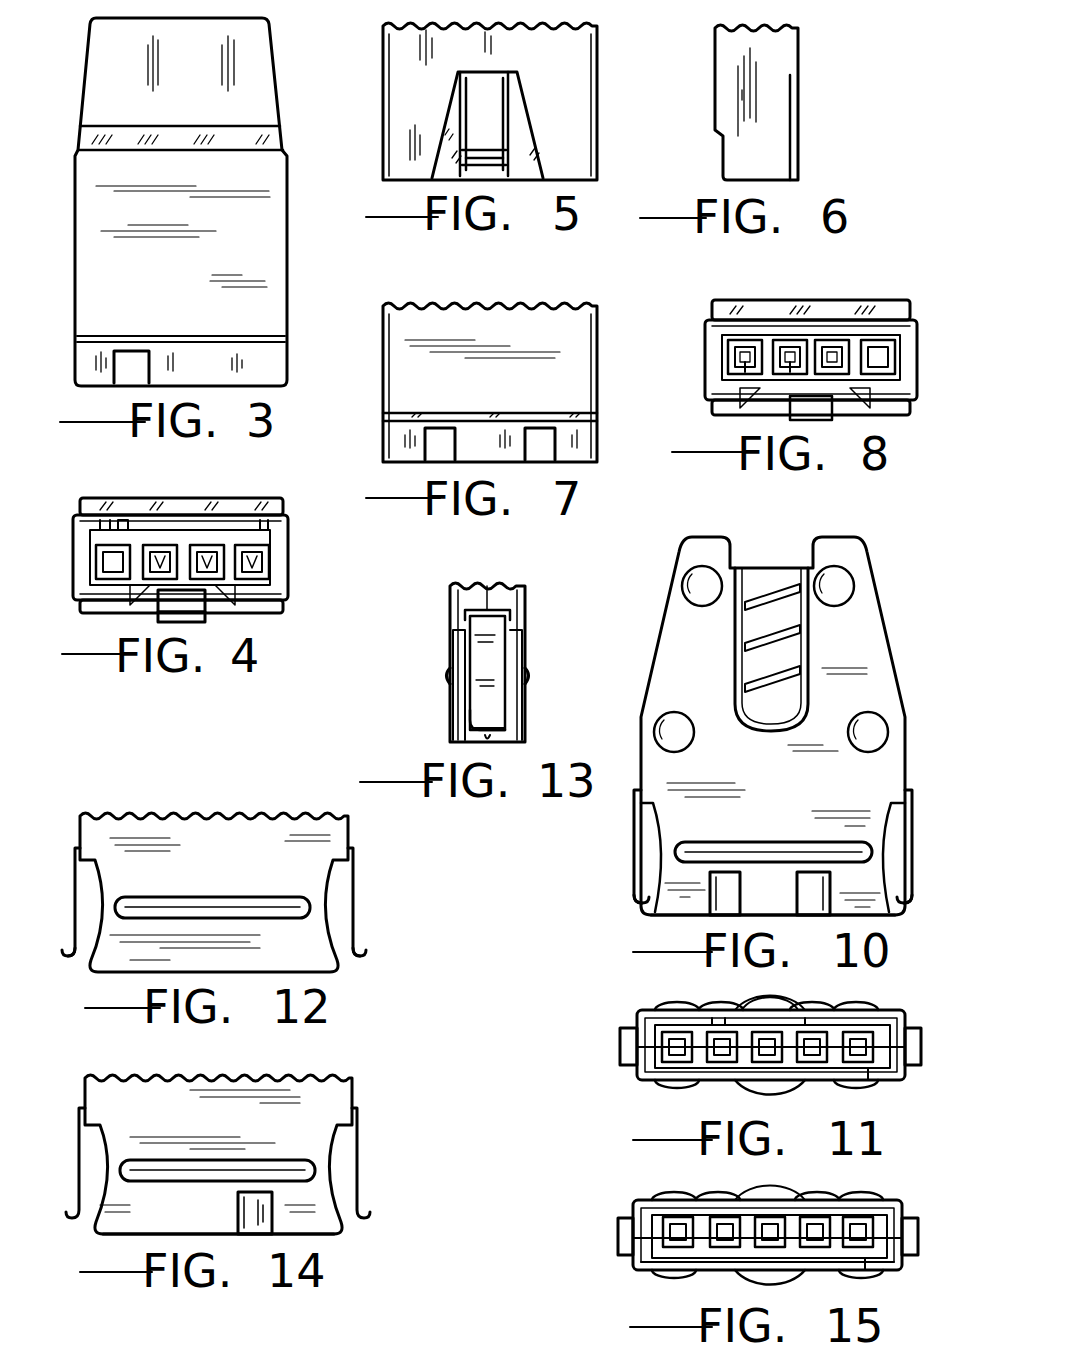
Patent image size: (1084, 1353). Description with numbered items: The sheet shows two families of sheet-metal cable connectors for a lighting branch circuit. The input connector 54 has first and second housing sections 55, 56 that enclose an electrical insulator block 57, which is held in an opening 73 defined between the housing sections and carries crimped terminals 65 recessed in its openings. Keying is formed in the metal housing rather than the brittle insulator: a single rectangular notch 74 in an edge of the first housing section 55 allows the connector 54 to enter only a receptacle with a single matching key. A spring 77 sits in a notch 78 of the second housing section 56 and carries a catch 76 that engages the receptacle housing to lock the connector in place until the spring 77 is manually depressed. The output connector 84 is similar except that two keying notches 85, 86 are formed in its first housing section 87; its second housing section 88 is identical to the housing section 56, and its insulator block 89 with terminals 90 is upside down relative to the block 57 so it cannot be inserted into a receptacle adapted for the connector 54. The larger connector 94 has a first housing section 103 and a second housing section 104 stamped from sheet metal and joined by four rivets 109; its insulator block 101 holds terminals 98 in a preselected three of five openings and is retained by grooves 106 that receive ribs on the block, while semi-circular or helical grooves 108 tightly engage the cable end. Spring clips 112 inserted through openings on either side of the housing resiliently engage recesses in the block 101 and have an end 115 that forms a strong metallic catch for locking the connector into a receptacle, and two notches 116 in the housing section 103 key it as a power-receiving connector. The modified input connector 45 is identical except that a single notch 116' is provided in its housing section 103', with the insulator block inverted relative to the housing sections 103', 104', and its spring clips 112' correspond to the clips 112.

In FIG. 14, the input connector 45 is at (358, 1090).
In FIG. 15, the input connector 45 is at (628, 1240).
In FIG. 3, the input connector 54 is at (282, 104).
In FIG. 3, the first housing section 55 is at (231, 240).
In FIG. 4, the first housing section 55 is at (224, 500).
In FIG. 5, the second housing section 56 is at (597, 152).
In FIG. 4, the second housing section 56 is at (88, 613).
In FIG. 4, the electrical insulator block 57 is at (265, 585).
In FIG. 4, the terminal 65 is at (207, 560).
In FIG. 4, the opening 73 is at (104, 535).
In FIG. 3, the notch 74 is at (118, 356).
In FIG. 4, the notch 74 is at (122, 530).
In FIG. 5, the catch 76 is at (490, 152).
In FIG. 6, the catch 76 is at (805, 175).
In FIG. 4, the catch 76 is at (200, 605).
In FIG. 5, the spring 77 is at (512, 105).
In FIG. 6, the spring 77 is at (800, 118).
In FIG. 4, the spring 77 is at (192, 597).
In FIG. 5, the notch 78 is at (462, 104).
In FIG. 4, the notch 78 is at (95, 585).
In FIG. 7, the output connector 84 is at (598, 372).
In FIG. 8, the output connector 84 is at (870, 295).
In FIG. 7, the keying notch 85 is at (435, 432).
In FIG. 8, the keying notch 85 is at (770, 332).
In FIG. 7, the keying notch 86 is at (538, 432).
In FIG. 8, the keying notch 86 is at (842, 332).
In FIG. 7, the first housing section 87 is at (383, 370).
In FIG. 8, the first housing section 87 is at (755, 300).
In FIG. 8, the second housing section 88 is at (722, 416).
In FIG. 8, the insulator block 89 is at (890, 332).
In FIG. 8, the terminals 90 is at (790, 365).
In FIG. 13, the connector 94 is at (528, 622).
In FIG. 10, the connector 94 is at (655, 623).
In FIG. 12, the connector 94 is at (354, 822).
In FIG. 11, the terminal 98 is at (812, 1052).
In FIG. 11, the insulator block 101 is at (838, 1080).
In FIG. 15, the insulator block 101 is at (858, 1262).
In FIG. 10, the first housing section 103 is at (730, 936).
In FIG. 11, the first housing section 103 is at (731, 1034).
In FIG. 15, the second housing section 103' is at (742, 1207).
In FIG. 11, the second housing section 104 is at (726, 1067).
In FIG. 14, the side wall (alternate) 104' is at (261, 1252).
In FIG. 15, the side wall (alternate) 104' is at (748, 1286).
In FIG. 10, the grooves 106 is at (772, 842).
In FIG. 12, the grooves 106 is at (228, 896).
In FIG. 10, the semi-circular or helical grooves 108 is at (759, 704).
In FIG. 10, the rivets 109 is at (690, 605).
In FIG. 13, the spring clips 112 is at (449, 678).
In FIG. 10, the spring clips 112 is at (736, 851).
In FIG. 12, the spring clips 112 is at (227, 902).
In FIG. 11, the spring clips 112 is at (757, 1026).
In FIG. 14, the latch spring arm (alternate) 112' is at (255, 1156).
In FIG. 15, the latch spring arm (alternate) 112' is at (744, 1222).
In FIG. 13, the end 115 is at (478, 714).
In FIG. 10, the end 115 is at (631, 892).
In FIG. 12, the end 115 is at (64, 950).
In FIG. 10, the notches 116 is at (770, 889).
In FIG. 11, the notches 116 is at (756, 993).
In FIG. 14, the notch 116' is at (216, 1211).
In FIG. 15, the notch 116' is at (767, 1201).